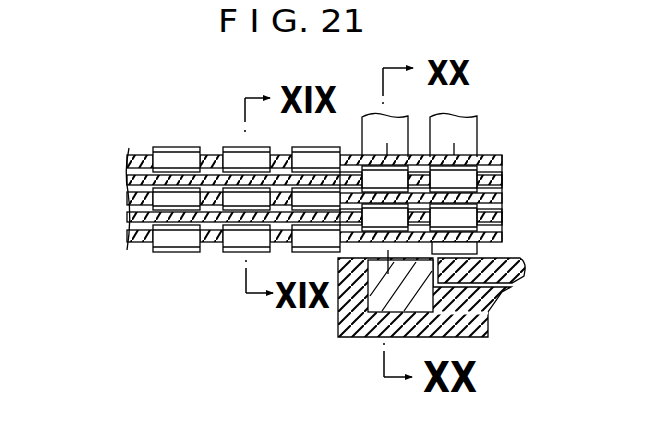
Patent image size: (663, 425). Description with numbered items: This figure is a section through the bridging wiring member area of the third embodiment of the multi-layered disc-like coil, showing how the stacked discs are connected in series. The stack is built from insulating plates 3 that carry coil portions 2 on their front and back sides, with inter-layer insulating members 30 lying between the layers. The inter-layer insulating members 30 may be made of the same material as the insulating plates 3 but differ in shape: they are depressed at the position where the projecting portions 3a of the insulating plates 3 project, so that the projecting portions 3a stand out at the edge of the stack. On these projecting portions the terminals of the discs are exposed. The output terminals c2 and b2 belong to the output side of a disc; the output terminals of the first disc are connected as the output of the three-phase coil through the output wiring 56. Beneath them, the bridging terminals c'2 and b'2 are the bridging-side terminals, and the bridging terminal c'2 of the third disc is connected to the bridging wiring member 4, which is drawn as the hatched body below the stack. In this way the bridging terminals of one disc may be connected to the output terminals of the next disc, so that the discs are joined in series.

The coil portion 2 is at (176, 147).
The insulating plate 3 is at (143, 155).
The projecting portion 3a is at (502, 160).
The bridging wiring member 4 is at (431, 310).
The inter-layer insulating member 30 is at (128, 178).
The output wiring 56 is at (402, 107).
The output terminal c2 is at (388, 138).
The output terminal b2 is at (454, 138).
The bridging terminal c'2 is at (400, 281).
The bridging terminal b'2 is at (491, 245).